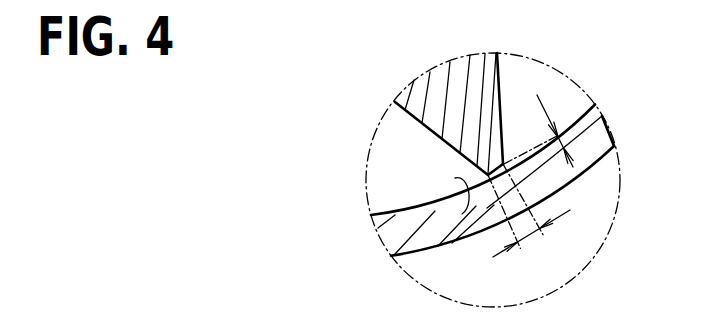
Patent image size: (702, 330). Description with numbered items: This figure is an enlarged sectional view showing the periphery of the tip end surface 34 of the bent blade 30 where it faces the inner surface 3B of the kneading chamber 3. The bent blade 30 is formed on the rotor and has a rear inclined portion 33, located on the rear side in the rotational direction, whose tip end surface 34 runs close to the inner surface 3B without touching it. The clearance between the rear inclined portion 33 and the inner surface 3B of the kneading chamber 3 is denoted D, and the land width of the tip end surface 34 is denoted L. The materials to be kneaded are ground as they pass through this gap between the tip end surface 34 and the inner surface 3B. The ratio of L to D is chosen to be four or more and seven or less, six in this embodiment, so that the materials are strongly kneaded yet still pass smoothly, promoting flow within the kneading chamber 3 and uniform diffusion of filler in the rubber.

The kneading chamber 3 is at (400, 185).
The inner surface 3B is at (455, 178).
The bent blade 30 is at (442, 92).
The rear inclined portion 33 is at (482, 93).
The tip end surface 34 is at (450, 248).
The clearance D is at (546, 131).
The width of the tip end surface L is at (538, 233).